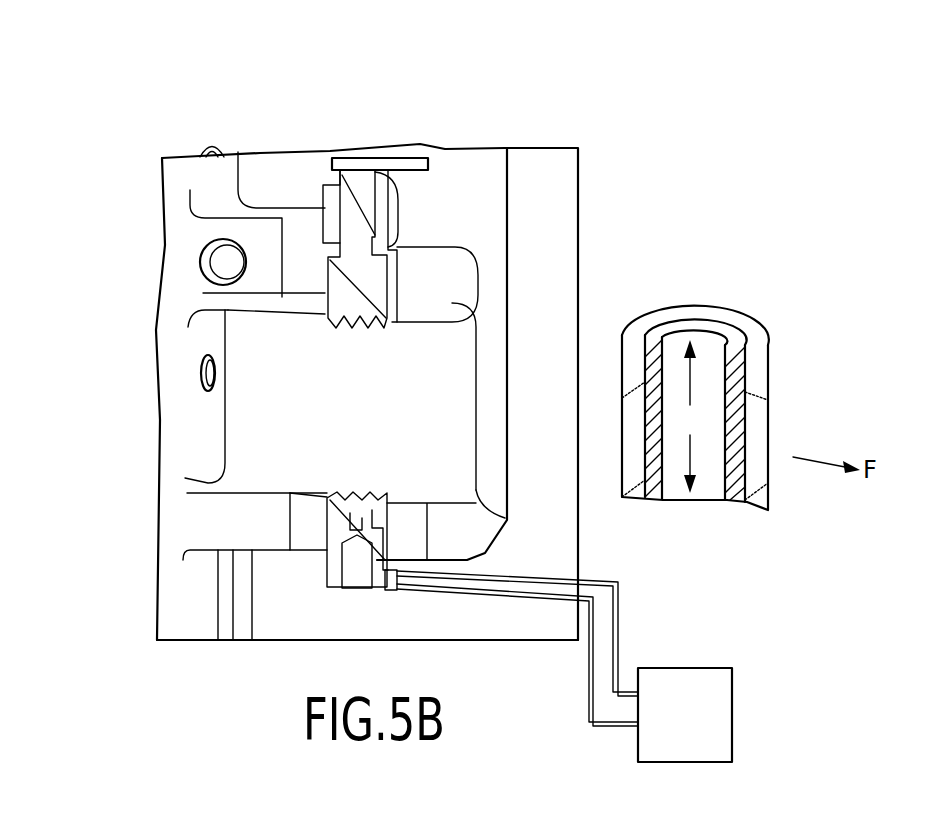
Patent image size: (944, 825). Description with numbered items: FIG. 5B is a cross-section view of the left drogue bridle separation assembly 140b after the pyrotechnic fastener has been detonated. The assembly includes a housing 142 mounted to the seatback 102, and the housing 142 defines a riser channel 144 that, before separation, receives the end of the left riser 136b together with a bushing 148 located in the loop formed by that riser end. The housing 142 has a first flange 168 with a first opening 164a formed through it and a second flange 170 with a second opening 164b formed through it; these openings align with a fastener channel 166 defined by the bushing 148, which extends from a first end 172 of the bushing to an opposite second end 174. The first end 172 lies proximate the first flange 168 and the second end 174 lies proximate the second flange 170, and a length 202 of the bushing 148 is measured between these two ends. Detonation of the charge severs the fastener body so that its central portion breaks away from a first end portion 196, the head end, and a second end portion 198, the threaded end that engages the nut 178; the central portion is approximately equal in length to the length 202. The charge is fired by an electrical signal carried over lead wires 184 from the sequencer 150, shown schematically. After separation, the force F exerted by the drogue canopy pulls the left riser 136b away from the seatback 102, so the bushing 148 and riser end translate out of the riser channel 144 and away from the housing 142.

The left drogue bridle separation assembly 140b is at (423, 108).
The housing 142 is at (173, 185).
The seatback 102 is at (562, 188).
The nut 178 is at (323, 192).
The second flange 170 is at (411, 268).
The second opening 164b is at (406, 286).
The second end portion 198 is at (352, 267).
The riser channel 144 is at (229, 374).
The first end portion 196 is at (335, 517).
The first flange 168 is at (305, 547).
The first opening 164a is at (406, 529).
The lead wires 184 is at (500, 577).
The sequencer 150 is at (696, 727).
The left riser 136b is at (747, 413).
The second end 174 is at (663, 335).
The bushing 148 is at (737, 370).
The fastener channel 166 is at (712, 319).
The first end 172 is at (740, 502).
The length 202 is at (689, 416).